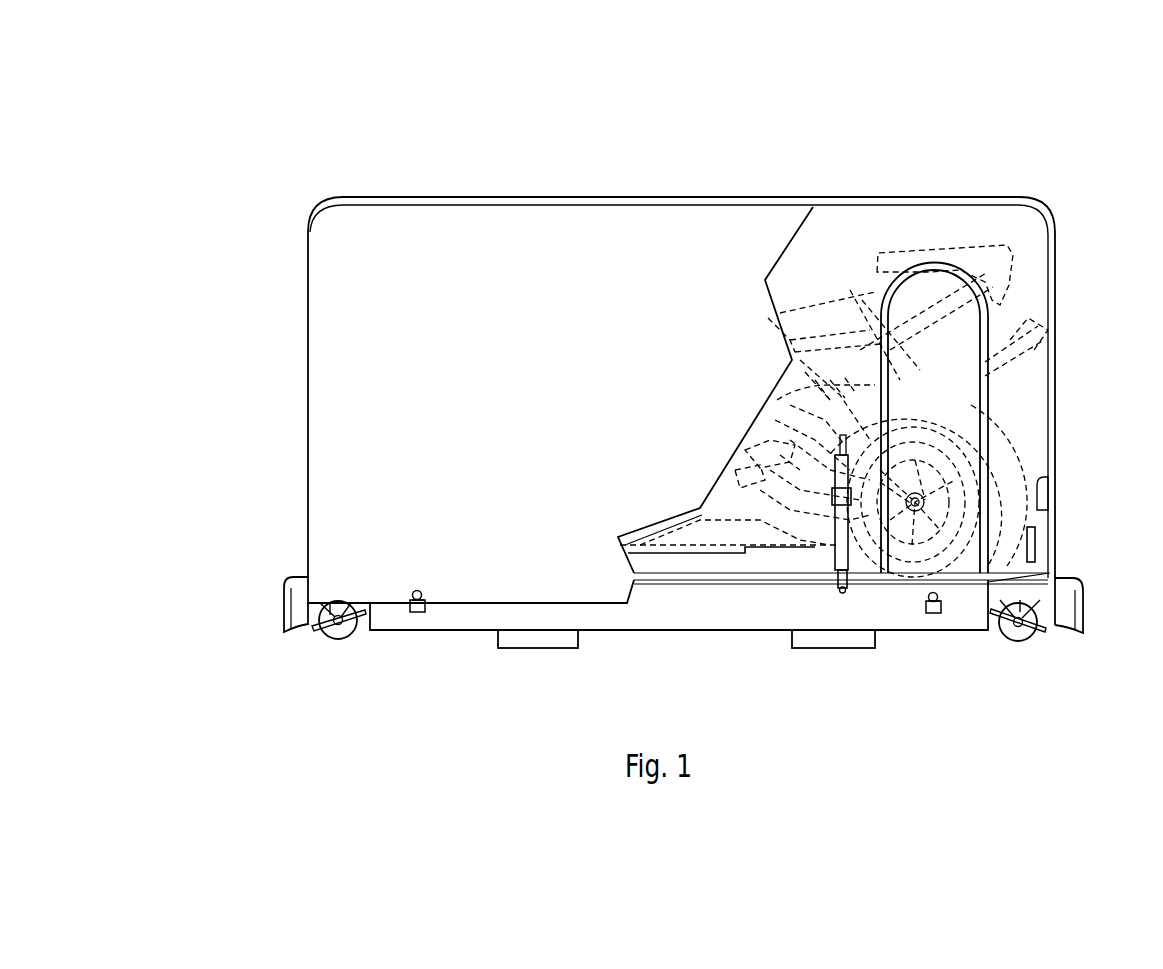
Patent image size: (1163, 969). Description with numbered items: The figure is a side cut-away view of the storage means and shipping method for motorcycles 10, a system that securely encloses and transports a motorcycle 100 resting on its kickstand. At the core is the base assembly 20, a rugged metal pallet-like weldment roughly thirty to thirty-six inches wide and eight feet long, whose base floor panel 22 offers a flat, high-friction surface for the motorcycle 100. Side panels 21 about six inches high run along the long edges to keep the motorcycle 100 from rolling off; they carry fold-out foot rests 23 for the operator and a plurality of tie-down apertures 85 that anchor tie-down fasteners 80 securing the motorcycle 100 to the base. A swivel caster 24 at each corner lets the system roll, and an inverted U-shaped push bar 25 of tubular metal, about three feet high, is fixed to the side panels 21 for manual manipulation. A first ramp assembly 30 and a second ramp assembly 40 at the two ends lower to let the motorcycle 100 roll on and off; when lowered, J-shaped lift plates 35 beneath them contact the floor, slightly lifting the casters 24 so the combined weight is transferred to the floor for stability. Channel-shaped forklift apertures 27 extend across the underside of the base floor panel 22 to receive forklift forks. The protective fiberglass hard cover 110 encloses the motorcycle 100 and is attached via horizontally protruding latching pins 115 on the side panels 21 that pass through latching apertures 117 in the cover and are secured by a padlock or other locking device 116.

The storage means and shipping method for motorcycles 10 is at (246, 144).
The hard cover 110 is at (1058, 262).
The motorcycle 100 is at (925, 258).
The push bar 25 is at (987, 386).
The base assembly 20 is at (628, 655).
The side panels 21 is at (413, 632).
The base floor panel 22 is at (773, 577).
The foot rests 23 is at (698, 550).
The forklift apertures 27 is at (557, 640).
The first ramp assembly 30 is at (1073, 562).
The second ramp assembly 40 is at (265, 582).
The lift plates 35 is at (293, 606).
The swivel caster 24 is at (320, 630).
The tie-down fasteners 80 is at (846, 572).
The tie-down apertures 85 is at (841, 594).
The latching pins 115 is at (412, 606).
The locking device 116 is at (426, 606).
The latching apertures 117 is at (420, 591).